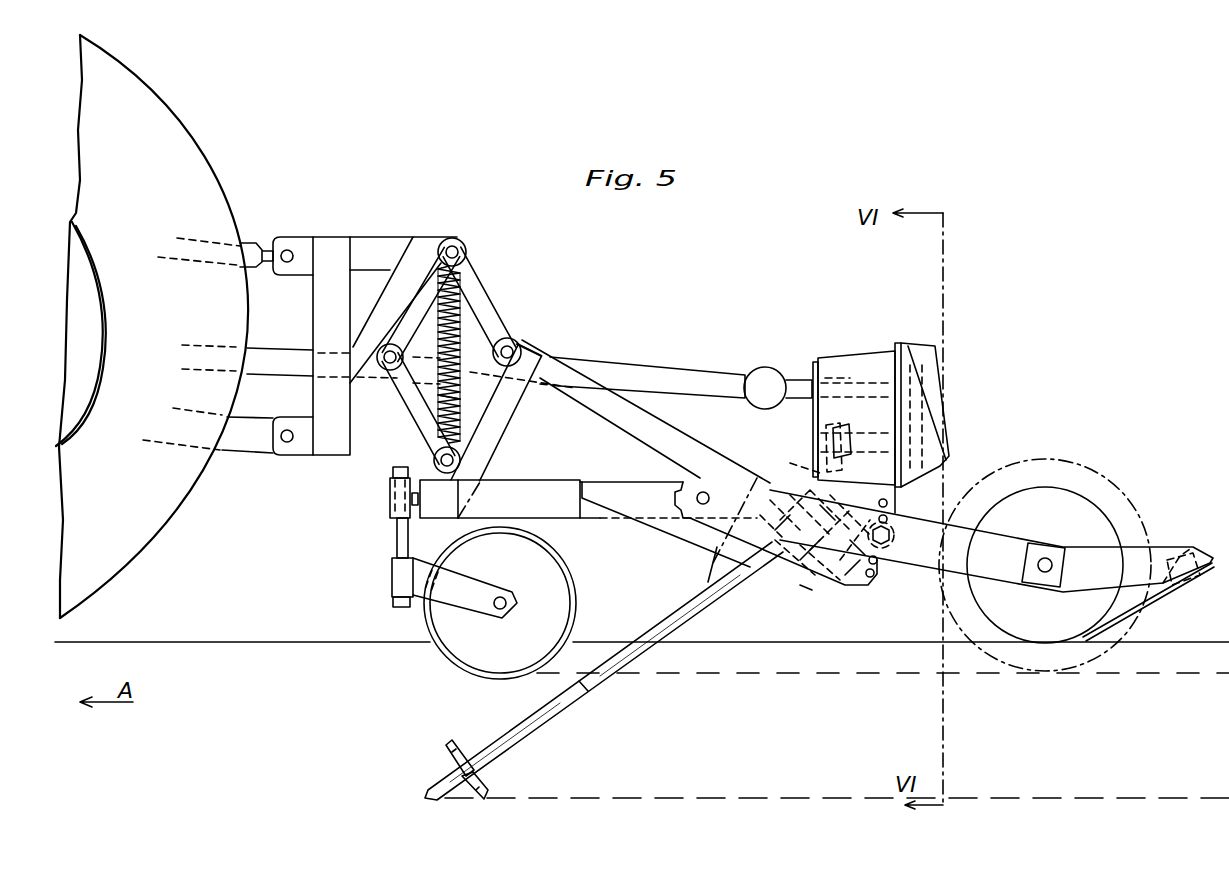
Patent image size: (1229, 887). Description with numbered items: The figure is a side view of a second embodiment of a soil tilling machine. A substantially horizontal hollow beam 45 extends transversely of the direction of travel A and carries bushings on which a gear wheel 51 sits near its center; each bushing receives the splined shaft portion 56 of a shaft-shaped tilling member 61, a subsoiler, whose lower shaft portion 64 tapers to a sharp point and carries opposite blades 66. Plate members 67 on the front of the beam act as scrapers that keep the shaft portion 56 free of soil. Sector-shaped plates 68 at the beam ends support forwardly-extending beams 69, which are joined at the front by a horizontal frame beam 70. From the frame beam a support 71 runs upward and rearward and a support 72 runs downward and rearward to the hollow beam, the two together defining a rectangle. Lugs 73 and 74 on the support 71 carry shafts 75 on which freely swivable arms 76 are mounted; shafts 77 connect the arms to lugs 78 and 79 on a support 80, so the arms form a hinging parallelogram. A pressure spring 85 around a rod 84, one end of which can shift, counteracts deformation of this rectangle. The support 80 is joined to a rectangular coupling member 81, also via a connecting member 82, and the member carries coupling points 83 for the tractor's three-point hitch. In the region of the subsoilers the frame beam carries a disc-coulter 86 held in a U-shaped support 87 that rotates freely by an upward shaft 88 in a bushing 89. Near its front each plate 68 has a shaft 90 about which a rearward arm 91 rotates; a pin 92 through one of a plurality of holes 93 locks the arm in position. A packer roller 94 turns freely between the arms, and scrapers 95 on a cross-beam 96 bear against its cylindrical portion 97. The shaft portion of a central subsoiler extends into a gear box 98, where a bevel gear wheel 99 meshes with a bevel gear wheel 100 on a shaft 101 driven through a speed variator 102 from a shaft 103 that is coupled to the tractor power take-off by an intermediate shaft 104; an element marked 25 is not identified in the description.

The link bar 25 is at (470, 470).
The hollow beam 45 is at (818, 600).
The gear wheel 51 is at (803, 588).
The shaft portion 56 is at (700, 622).
The tilling member 61 is at (609, 695).
The shaft portion 64 is at (560, 718).
The blades 66 is at (447, 745).
The plate members 67 is at (707, 568).
The plates 68 is at (840, 590).
The beams 69 is at (593, 520).
The frame beam 70 is at (432, 518).
The support 71 is at (514, 435).
The support 72 is at (640, 450).
The lug 73 is at (432, 460).
The lug 74 is at (528, 345).
The shafts 75 is at (507, 338).
The arms 76 is at (500, 290).
The shafts 77 is at (470, 262).
The lug 78 is at (455, 240).
The lug 79 is at (403, 348).
The support 80 is at (421, 237).
The rectangular coupling member 81 is at (313, 300).
The connecting member 82 is at (378, 235).
The coupling points 83 is at (288, 232).
The rod 84 is at (447, 350).
The pressure spring 85 is at (455, 398).
The disc-coulters 86 is at (577, 603).
The U-shaped support 87 is at (490, 590).
The shaft 88 is at (398, 542).
The bushing 89 is at (390, 506).
The shaft 90 is at (680, 480).
The arm 91 is at (1002, 578).
The pin 92 is at (893, 512).
The holes 93 is at (885, 572).
The roller 94 is at (1078, 460).
The scrapers 95 is at (1160, 608).
The cross-beam 96 is at (1190, 583).
The cylindrical portion 97 is at (1120, 515).
The gear box 98 is at (855, 350).
The bevel gear wheel 99 is at (813, 463).
The bevel gear wheel 100 is at (805, 430).
The shaft 101 is at (870, 435).
The speed variator 102 is at (952, 447).
The shaft 103 is at (837, 383).
The intermediate shaft 104 is at (717, 373).